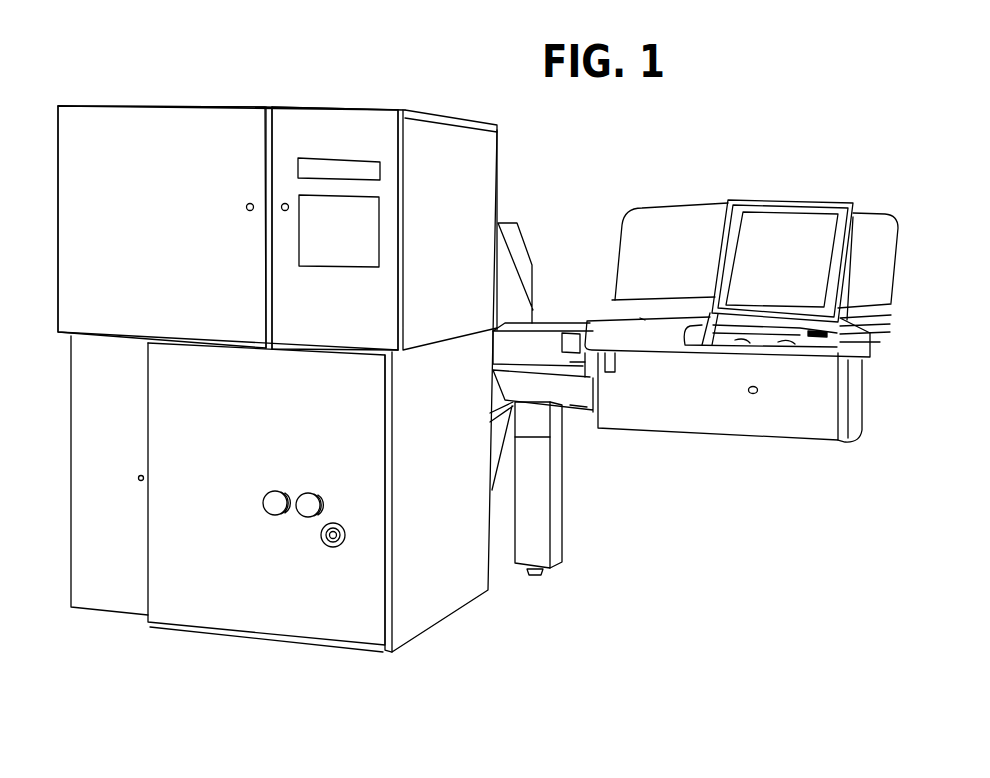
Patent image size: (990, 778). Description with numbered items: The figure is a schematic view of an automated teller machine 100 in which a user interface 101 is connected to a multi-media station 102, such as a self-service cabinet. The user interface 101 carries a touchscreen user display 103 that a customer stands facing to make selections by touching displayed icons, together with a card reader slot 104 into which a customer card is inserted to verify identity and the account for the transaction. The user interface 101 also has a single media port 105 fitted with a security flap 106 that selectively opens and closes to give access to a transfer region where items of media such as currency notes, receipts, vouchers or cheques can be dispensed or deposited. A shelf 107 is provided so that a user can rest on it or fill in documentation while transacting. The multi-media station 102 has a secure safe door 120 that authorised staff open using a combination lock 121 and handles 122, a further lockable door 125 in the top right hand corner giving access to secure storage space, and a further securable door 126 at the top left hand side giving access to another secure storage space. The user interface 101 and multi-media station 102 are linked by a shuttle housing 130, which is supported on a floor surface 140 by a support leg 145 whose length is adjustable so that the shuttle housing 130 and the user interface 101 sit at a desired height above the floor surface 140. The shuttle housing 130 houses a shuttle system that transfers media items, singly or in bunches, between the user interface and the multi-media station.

The automated teller machine 100 is at (683, 611).
The user interface 101 is at (738, 176).
The multi-media station 102 is at (277, 665).
The touchscreen user display 103 is at (800, 242).
The card reader slot 104 is at (826, 327).
The media port 105 is at (737, 340).
The security flap 106 is at (780, 342).
The shelf 107 is at (643, 318).
The secure safe door 120 is at (176, 597).
The combination lock 121 is at (325, 546).
The handles 122 is at (267, 494).
The lockable door 125 is at (313, 132).
The securable door 126 is at (188, 137).
The shuttle housing 130 is at (563, 297).
The floor surface 140 is at (580, 619).
The support leg 145 is at (535, 533).